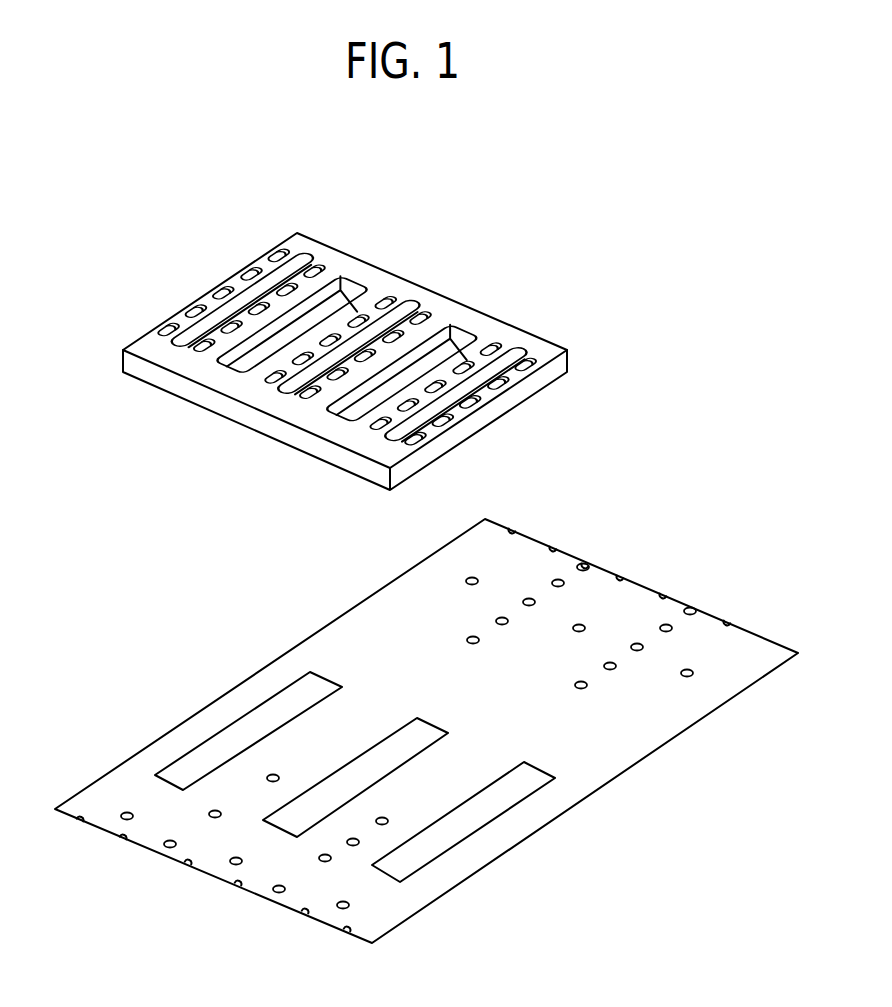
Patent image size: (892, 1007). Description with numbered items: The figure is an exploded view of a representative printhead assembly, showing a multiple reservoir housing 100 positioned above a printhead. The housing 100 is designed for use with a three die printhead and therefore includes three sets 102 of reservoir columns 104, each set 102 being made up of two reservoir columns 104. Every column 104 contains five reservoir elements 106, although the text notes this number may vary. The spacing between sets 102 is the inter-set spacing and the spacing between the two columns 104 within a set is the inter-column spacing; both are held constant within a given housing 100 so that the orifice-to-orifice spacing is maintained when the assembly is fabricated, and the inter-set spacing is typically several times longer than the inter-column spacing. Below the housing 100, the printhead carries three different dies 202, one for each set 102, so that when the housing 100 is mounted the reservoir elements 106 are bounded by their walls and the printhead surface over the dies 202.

The multiple reservoir housing 100 is at (415, 285).
The set of reservoir columns 102 is at (527, 346).
The reservoir column 104 is at (293, 405).
The reservoir element 106 is at (248, 278).
The die 202 is at (400, 858).